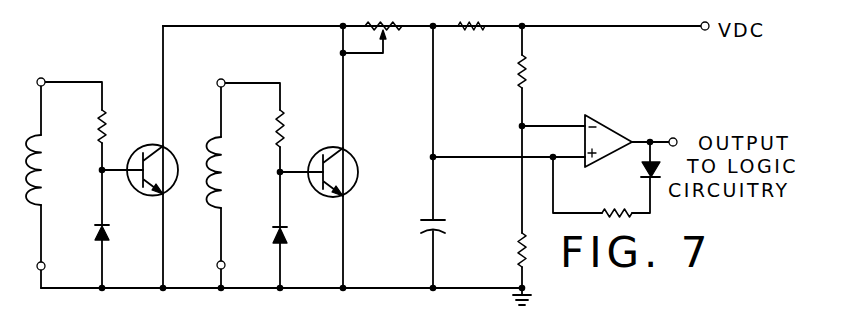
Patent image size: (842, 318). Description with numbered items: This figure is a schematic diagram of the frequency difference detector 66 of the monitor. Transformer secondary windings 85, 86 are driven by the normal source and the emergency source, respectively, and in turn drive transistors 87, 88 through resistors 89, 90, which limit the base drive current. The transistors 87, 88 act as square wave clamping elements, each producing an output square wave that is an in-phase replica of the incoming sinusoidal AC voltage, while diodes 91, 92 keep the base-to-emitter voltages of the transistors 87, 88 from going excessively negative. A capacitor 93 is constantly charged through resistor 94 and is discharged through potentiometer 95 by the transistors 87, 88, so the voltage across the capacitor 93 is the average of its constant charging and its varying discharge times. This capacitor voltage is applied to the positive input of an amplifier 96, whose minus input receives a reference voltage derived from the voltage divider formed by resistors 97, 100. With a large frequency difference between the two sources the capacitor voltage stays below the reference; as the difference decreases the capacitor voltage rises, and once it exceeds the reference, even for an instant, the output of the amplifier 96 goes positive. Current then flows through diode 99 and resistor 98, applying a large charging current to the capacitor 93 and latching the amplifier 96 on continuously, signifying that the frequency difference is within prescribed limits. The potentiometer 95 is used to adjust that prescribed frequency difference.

The frequency difference detector 66 is at (131, 75).
The transformer secondary winding 85 is at (30, 157).
The transformer secondary winding 86 is at (203, 187).
The transistor 87 is at (150, 145).
The transistor 88 is at (385, 137).
The resistor 89 is at (100, 124).
The resistor 90 is at (280, 128).
The diode 91 is at (107, 238).
The diode 92 is at (288, 235).
The capacitor 93 is at (427, 232).
The resistor 94 is at (478, 28).
The potentiometer 95 is at (402, 30).
The amplifier 96 is at (615, 125).
The resistor 97 is at (517, 243).
The resistor 98 is at (628, 210).
The diode 99 is at (645, 172).
The resistor 100 is at (528, 58).